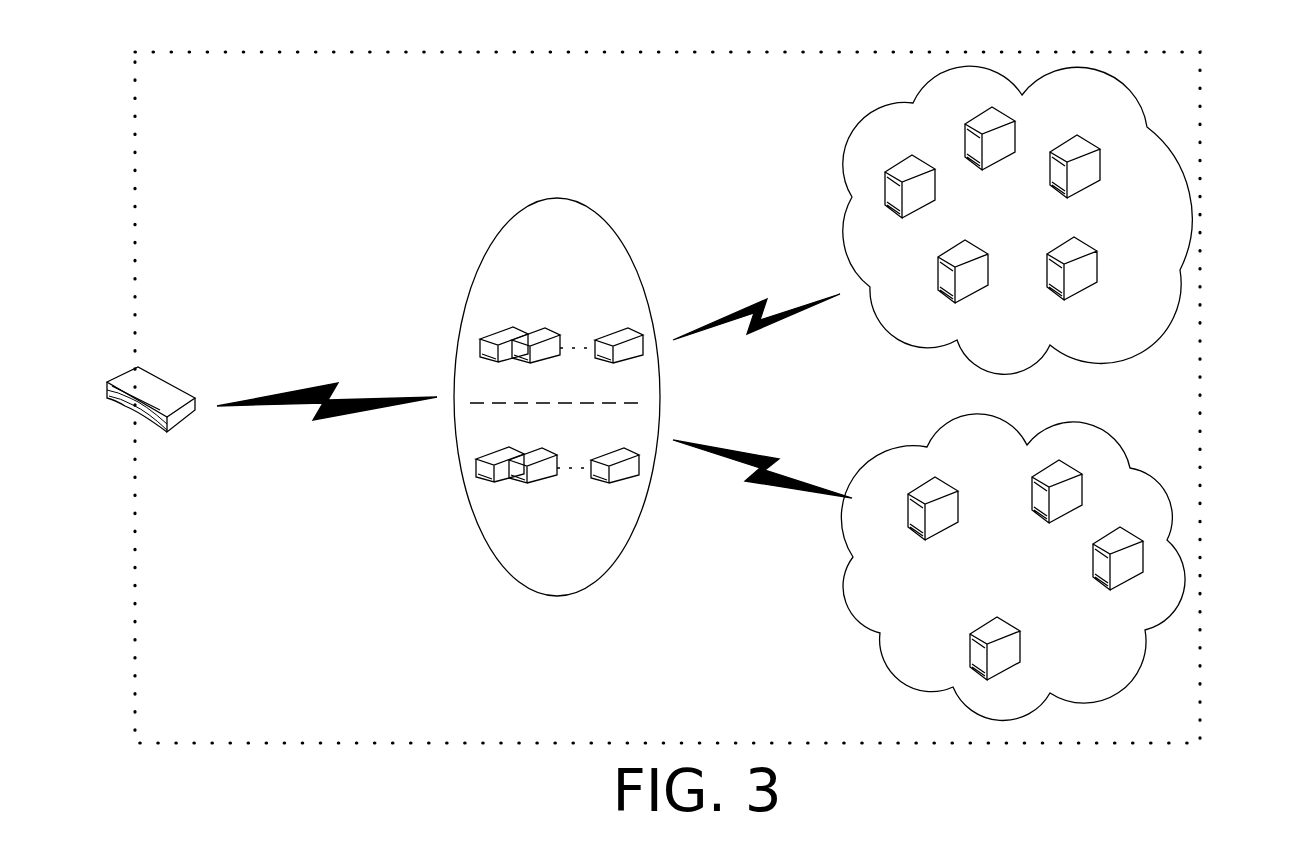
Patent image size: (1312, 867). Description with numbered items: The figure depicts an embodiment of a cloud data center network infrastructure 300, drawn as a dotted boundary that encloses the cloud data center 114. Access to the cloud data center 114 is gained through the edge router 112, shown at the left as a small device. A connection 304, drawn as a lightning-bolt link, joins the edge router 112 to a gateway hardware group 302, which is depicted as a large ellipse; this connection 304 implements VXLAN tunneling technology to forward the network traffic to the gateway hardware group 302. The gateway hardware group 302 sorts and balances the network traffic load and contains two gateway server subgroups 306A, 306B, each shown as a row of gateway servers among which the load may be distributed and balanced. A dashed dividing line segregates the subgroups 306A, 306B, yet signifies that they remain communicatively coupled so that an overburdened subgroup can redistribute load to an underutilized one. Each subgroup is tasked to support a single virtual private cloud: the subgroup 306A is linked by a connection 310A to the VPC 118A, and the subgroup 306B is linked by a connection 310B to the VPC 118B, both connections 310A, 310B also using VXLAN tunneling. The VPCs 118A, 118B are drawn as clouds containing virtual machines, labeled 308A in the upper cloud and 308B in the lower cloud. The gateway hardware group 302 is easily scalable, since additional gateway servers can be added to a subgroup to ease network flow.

The cloud data center 114 is at (500, 72).
The cloud data center network infrastructure 300 is at (1212, 89).
The edge router 112 is at (150, 378).
The connection 304 is at (332, 388).
The gateway hardware group 302 is at (478, 543).
The gateway server subgroup 306A is at (582, 298).
The gateway server subgroup 306B is at (582, 533).
The connection 310A is at (757, 305).
The connection 310B is at (757, 488).
The VPC 118A is at (1037, 245).
The VPC 118B is at (1037, 590).
The virtual machine 308A is at (887, 178).
The virtual machine 308B is at (970, 658).